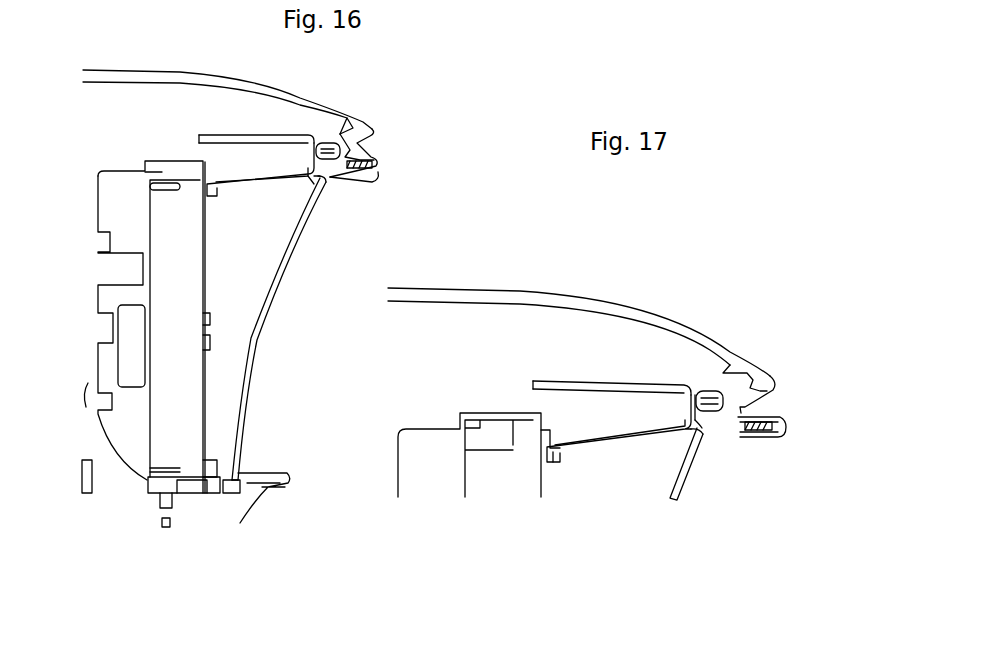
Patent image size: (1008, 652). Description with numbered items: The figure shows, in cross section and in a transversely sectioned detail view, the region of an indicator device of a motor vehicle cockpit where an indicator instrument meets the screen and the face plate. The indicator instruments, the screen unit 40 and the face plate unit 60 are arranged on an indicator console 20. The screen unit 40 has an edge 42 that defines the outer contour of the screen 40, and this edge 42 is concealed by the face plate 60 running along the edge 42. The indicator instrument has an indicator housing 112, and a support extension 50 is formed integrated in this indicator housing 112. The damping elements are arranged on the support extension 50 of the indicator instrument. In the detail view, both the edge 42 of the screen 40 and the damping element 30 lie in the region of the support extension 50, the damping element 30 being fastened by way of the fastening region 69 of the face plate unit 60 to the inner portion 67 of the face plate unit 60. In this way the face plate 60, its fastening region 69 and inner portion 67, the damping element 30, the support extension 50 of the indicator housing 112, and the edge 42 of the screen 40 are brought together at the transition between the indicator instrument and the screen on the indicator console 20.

In FIG. 17, the indicator console 20 is at (586, 278).
In FIG. 16, the damping element 30 is at (326, 141).
In FIG. 17, the damping element 30 is at (706, 388).
In FIG. 16, the screen unit 40 is at (276, 290).
In FIG. 17, the screen unit 40 is at (673, 505).
In FIG. 16, the edge 42 is at (325, 180).
In FIG. 17, the edge 42 is at (697, 432).
In FIG. 16, the support extension 50 is at (305, 158).
In FIG. 17, the support extension 50 is at (680, 418).
In FIG. 16, the face plate unit 60 is at (371, 185).
In FIG. 17, the face plate unit 60 is at (768, 360).
In FIG. 16, the inner portion 67 is at (349, 168).
In FIG. 17, the inner portion 67 is at (720, 432).
In FIG. 16, the fastening region 69 is at (338, 143).
In FIG. 16, the indicator housing 112 is at (283, 128).
In FIG. 17, the indicator housing 112 is at (590, 379).